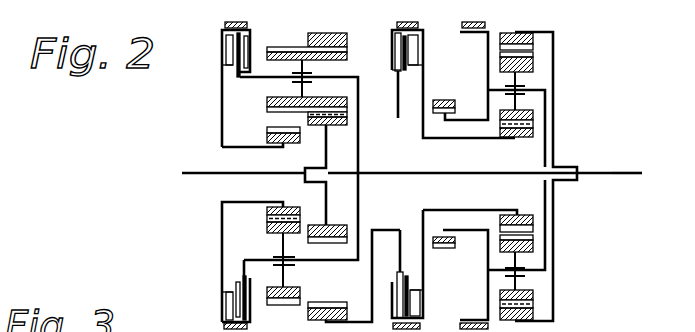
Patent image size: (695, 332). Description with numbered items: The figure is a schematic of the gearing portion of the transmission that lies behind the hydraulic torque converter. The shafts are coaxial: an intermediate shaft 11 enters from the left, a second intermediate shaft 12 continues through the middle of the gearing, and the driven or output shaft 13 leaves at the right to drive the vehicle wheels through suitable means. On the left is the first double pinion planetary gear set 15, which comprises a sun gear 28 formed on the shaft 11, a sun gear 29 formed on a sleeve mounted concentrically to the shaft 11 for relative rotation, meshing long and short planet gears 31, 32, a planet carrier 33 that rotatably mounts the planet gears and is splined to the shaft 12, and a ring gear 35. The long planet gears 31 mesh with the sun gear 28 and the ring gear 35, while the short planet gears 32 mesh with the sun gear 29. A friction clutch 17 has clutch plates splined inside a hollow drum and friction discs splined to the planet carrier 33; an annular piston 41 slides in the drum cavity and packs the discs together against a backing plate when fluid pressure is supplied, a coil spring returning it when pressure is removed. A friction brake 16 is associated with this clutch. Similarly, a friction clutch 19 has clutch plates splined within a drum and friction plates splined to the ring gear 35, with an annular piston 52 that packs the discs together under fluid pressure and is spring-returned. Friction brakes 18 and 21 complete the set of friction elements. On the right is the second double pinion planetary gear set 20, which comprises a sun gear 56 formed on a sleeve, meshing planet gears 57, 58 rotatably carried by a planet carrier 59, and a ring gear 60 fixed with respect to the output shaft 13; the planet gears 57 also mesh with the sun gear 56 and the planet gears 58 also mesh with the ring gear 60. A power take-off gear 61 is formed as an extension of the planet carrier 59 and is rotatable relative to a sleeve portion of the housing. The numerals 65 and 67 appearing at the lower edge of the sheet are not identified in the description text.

The intermediate shaft 11 is at (197, 173).
The second intermediate shaft 12 is at (440, 176).
The output shaft 13 is at (612, 171).
The first double pinion planetary gear set 15 is at (291, 46).
The friction brake 16 is at (226, 21).
The friction clutch 17 is at (216, 71).
The friction brake 18 is at (410, 20).
The friction clutch 19 is at (388, 42).
The second double pinion planetary gear set 20 is at (542, 56).
The friction brake 21 is at (490, 21).
The sun gear 28 is at (337, 123).
The sun gear 29 is at (272, 144).
The long planet gears 31 is at (268, 104).
The short planet gears 32 is at (270, 306).
The planet carrier 33 is at (358, 206).
The ring gear 35 is at (333, 302).
The annular piston 41 is at (222, 297).
The annular piston 52 is at (424, 300).
The sun gear 56 is at (535, 228).
The planet gears 57 is at (497, 58).
The planet gears 58 is at (535, 241).
The planet carrier 59 is at (548, 143).
The ring gear 60 is at (535, 46).
The power take-off gear 61 is at (446, 100).
The element 65 is at (608, 324).
The element 67 is at (679, 327).